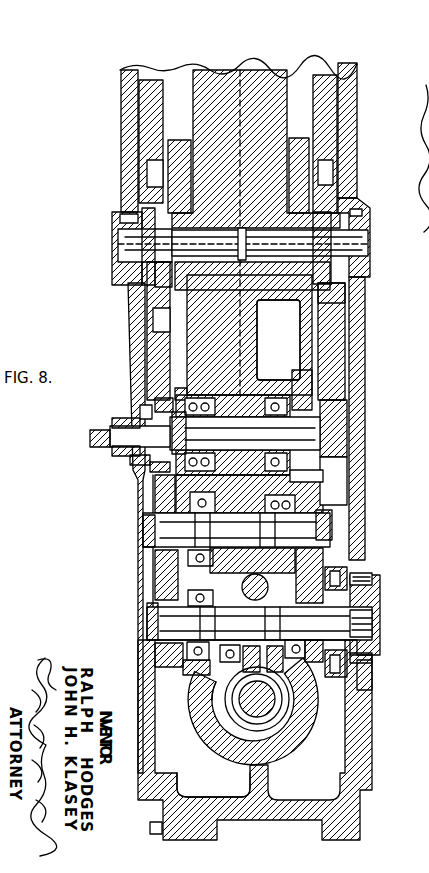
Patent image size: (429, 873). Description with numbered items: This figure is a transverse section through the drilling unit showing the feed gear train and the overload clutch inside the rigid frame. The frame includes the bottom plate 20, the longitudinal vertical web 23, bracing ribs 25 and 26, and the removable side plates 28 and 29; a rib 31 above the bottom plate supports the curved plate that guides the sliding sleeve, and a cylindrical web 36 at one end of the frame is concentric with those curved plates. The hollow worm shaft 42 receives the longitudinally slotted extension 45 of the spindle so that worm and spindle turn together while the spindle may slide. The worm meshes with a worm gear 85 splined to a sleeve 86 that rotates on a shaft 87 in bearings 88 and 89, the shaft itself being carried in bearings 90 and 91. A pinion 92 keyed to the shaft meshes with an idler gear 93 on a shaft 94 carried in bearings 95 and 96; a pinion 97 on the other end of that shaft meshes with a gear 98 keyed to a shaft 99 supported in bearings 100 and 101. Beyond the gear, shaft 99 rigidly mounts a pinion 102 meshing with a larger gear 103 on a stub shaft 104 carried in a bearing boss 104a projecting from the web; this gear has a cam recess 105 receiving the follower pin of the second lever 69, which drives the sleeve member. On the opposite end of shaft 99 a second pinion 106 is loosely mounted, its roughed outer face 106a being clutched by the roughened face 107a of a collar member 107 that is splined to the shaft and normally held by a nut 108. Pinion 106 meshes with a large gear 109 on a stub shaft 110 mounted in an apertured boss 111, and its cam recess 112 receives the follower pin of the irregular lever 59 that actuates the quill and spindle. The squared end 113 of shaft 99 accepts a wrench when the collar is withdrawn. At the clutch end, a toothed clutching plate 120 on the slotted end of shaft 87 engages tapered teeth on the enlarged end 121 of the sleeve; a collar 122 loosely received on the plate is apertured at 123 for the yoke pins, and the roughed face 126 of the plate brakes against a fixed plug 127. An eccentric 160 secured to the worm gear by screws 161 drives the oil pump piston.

The bottom plate 20 is at (303, 778).
The longitudinal vertical web 23 is at (260, 287).
The bracing rib 25 is at (200, 138).
The bracing rib 26 is at (203, 340).
The removable side plate 28 is at (140, 320).
The removable side plate 29 is at (362, 358).
The rib 31 is at (250, 781).
The cylindrical web 36 is at (302, 746).
The hollow worm shaft 42 is at (233, 706).
The longitudinally slotted extension of the spindle 45 is at (260, 708).
The irregular lever 59 is at (180, 186).
The second irregularly shaped lever 69 is at (300, 158).
The worm gear 85 is at (245, 578).
The sleeve 86 is at (300, 562).
The shaft 87 is at (259, 623).
The bearing 88 is at (197, 664).
The bearing 89 is at (270, 587).
The bearing 90 is at (372, 627).
The bearing 91 is at (185, 658).
The pinion 92 is at (148, 602).
The idler gear 93 is at (162, 565).
The shaft 94 is at (143, 530).
The bearing 95 is at (300, 485).
The bearing 96 is at (155, 503).
The pinion 97 is at (305, 514).
The gear 98 is at (350, 455).
The shaft 99 is at (215, 433).
The bearing 100 is at (280, 396).
The bearing 101 is at (207, 392).
The pinion 102 is at (335, 419).
The larger gear 103 is at (360, 310).
The stub shaft 104 is at (352, 279).
The bearing boss 104a is at (300, 282).
The cam recess 105 is at (322, 170).
The second pinion 106 is at (155, 468).
The roughed outer face 106a is at (160, 406).
The collar member 107 is at (135, 459).
The roughened face 107a is at (148, 411).
The nut 108 is at (135, 422).
The large gear 109 is at (148, 118).
The stub shaft 110 is at (178, 275).
The apertured boss 111 is at (140, 212).
The cam recess 112 is at (152, 170).
The squared end of shaft 113 is at (90, 436).
The toothed clutching plate 120 is at (372, 652).
The enlarged end of sleeve 121 is at (348, 575).
The collar 122 is at (347, 662).
The aperture 123 is at (362, 686).
The roughed outer face 126 is at (372, 585).
The fixed plug 127 is at (381, 604).
The eccentric 160 is at (333, 652).
The screws 161 is at (198, 736).